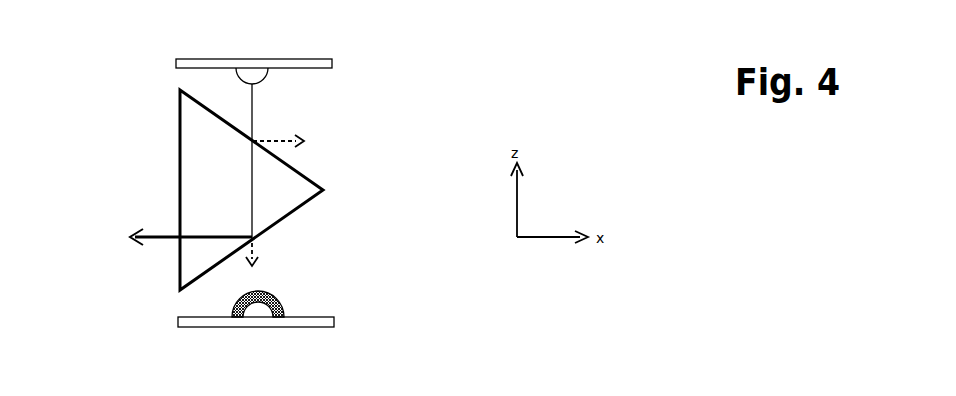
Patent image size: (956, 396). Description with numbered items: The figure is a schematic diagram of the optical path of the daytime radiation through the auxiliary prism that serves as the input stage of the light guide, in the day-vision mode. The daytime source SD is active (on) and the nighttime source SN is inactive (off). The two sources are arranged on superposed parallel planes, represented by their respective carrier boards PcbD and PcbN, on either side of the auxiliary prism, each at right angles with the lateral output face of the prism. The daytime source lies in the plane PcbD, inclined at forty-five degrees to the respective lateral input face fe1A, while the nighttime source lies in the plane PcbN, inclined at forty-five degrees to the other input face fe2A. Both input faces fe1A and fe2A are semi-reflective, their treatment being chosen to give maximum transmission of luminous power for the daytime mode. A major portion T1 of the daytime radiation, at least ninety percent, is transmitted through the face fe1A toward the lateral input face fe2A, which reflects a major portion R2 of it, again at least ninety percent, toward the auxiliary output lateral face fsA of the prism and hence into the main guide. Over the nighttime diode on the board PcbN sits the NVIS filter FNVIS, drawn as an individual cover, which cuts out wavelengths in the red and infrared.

The carrier board of the daytime source PcbD is at (333, 63).
The daytime source SD is at (212, 53).
The auxiliary output face fsA is at (225, 190).
The transmission coefficient of face fe1A T1 is at (221, 162).
The first lateral input face fe1A is at (287, 165).
The second lateral input face fe2A is at (282, 222).
The reflection coefficient of face fe2A R2 is at (140, 237).
The NVIS filter FNVIS is at (284, 304).
The carrier board of the nighttime source PcbN is at (176, 320).
The nighttime source SN is at (277, 352).